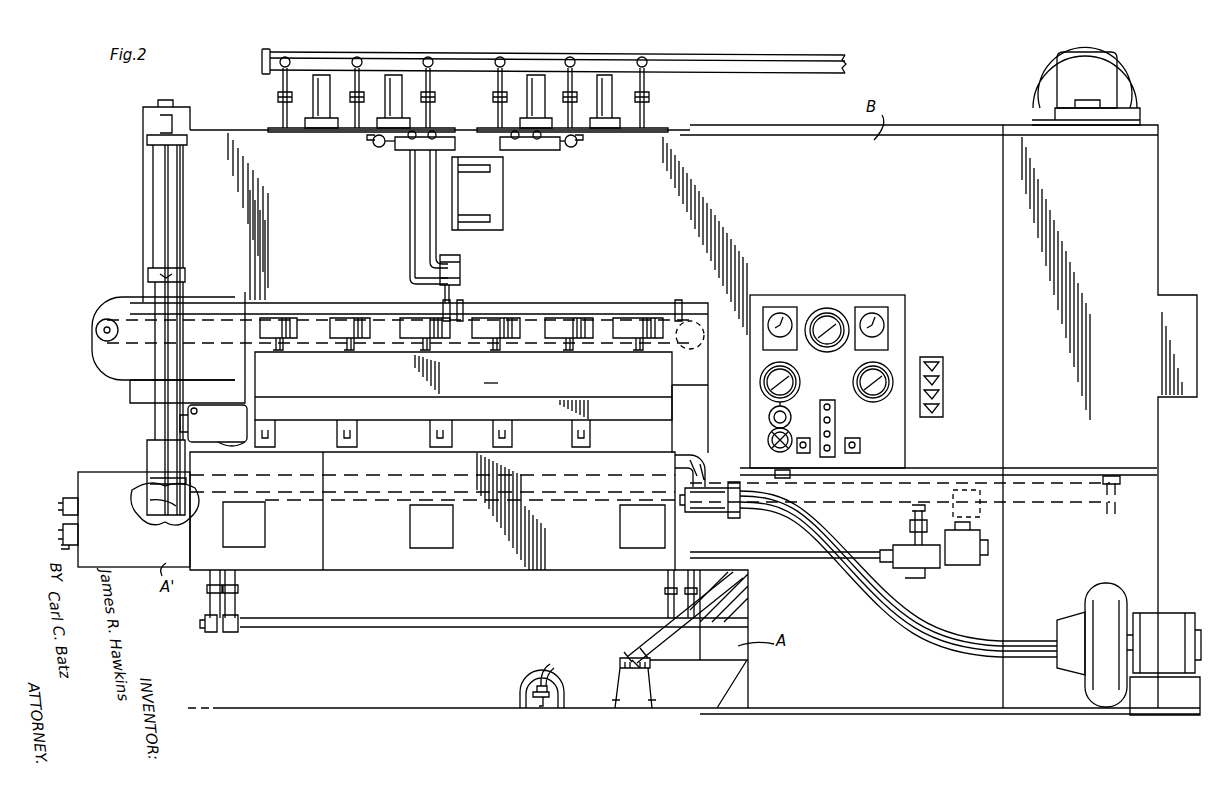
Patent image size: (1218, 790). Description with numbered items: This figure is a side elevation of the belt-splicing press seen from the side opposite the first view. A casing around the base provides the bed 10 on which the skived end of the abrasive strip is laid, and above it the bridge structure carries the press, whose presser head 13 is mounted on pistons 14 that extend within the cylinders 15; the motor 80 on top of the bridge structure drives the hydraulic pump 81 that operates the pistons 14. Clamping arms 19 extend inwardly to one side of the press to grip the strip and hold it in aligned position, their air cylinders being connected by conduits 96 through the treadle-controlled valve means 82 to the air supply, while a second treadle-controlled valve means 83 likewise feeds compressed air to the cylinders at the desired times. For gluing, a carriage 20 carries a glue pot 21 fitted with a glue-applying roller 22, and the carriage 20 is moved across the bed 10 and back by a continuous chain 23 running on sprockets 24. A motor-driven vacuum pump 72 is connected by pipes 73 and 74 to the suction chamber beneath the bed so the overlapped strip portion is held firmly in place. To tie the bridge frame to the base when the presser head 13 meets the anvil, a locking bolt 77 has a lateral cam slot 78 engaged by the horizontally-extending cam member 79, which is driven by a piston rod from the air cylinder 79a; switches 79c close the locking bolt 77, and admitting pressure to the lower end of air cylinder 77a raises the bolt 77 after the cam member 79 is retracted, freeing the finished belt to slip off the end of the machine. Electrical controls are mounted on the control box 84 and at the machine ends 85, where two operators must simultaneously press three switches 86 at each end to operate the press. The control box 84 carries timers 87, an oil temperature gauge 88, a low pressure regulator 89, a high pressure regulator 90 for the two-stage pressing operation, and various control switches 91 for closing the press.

The bed 10 is at (386, 452).
The presser head 13 is at (652, 412).
The pistons 14 is at (412, 345).
The cylinders 15 is at (292, 303).
The clamping arms 19 is at (277, 436).
The carriage 20 is at (187, 368).
The glue pot 21 is at (238, 418).
The glue-applying roller 22 is at (228, 445).
The continuous chain 23 is at (133, 312).
The sprockets 24 is at (104, 327).
The motor-driven vacuum pump 72 is at (1110, 588).
The pipe 73 is at (905, 610).
The pipe 74 is at (700, 462).
The locking bolt 77 is at (160, 421).
The air cylinder 77a is at (158, 215).
The cam slot 78 is at (155, 478).
The cam member 79 is at (165, 505).
The air cylinder 79a is at (1036, 514).
The switches 79c is at (66, 504).
The motor 80 is at (1048, 54).
The hydraulic pump 81 is at (1070, 84).
The treadle-controlled valve means 82 is at (648, 690).
The treadle-controlled valve means 83 is at (530, 682).
The control box 84 is at (864, 290).
The machine ends 85 is at (78, 476).
The switches 86 is at (66, 541).
The timers 87 is at (782, 312).
The oil temperature gauge 88 is at (826, 312).
The low pressure regulator 89 is at (886, 370).
The high pressure regulator 90 is at (762, 380).
The control switches 91 is at (852, 455).
The conduits 96 is at (695, 588).